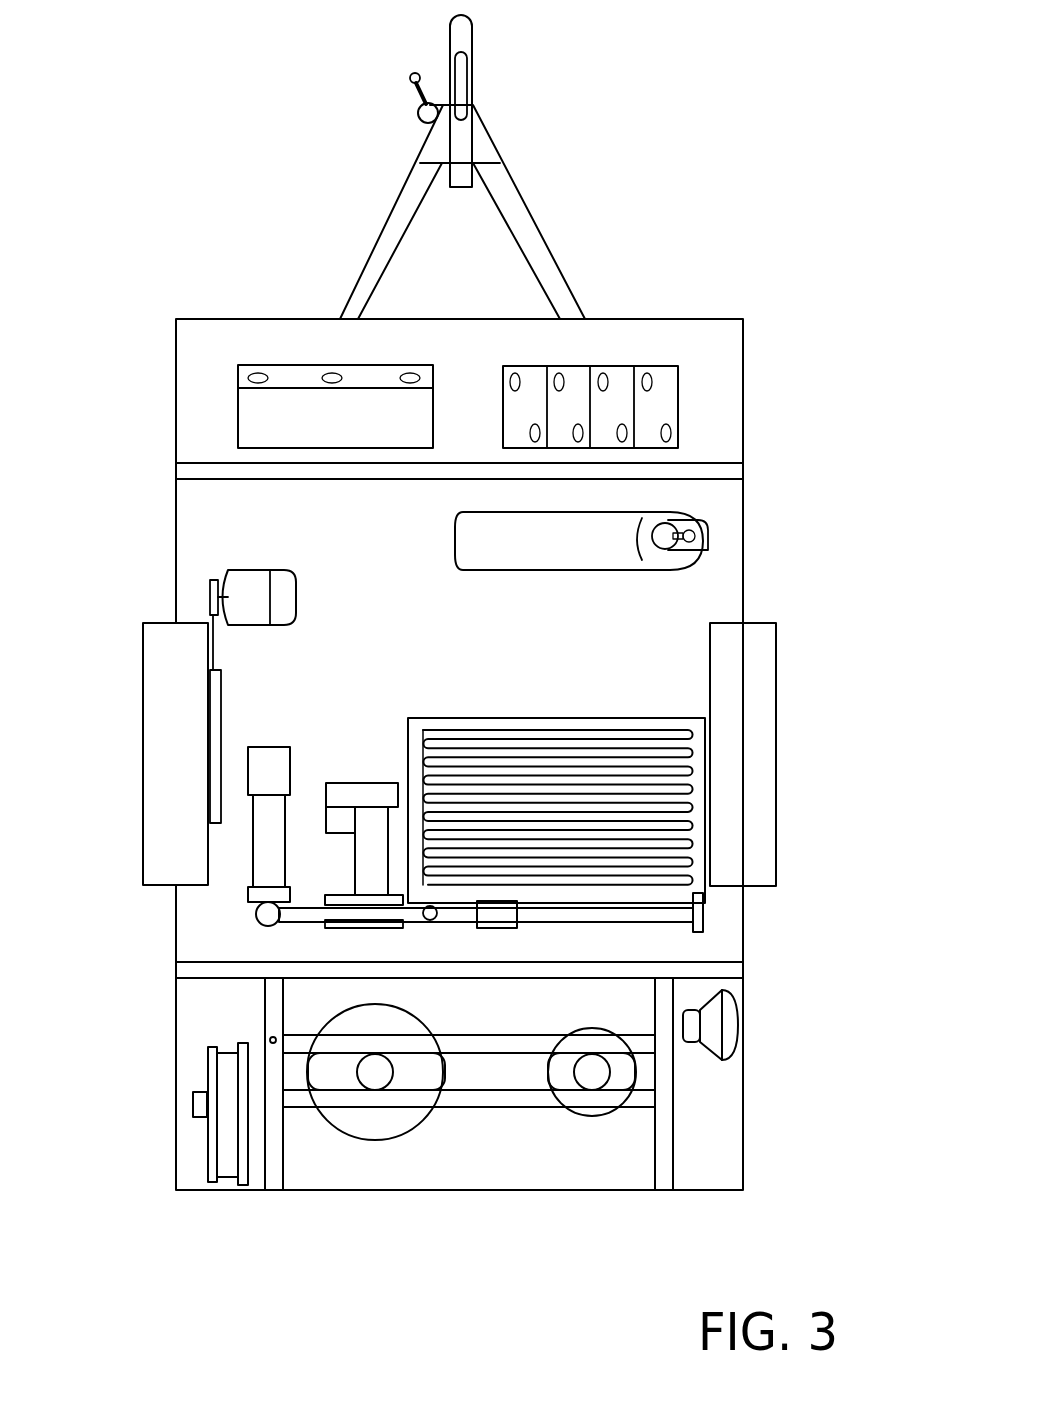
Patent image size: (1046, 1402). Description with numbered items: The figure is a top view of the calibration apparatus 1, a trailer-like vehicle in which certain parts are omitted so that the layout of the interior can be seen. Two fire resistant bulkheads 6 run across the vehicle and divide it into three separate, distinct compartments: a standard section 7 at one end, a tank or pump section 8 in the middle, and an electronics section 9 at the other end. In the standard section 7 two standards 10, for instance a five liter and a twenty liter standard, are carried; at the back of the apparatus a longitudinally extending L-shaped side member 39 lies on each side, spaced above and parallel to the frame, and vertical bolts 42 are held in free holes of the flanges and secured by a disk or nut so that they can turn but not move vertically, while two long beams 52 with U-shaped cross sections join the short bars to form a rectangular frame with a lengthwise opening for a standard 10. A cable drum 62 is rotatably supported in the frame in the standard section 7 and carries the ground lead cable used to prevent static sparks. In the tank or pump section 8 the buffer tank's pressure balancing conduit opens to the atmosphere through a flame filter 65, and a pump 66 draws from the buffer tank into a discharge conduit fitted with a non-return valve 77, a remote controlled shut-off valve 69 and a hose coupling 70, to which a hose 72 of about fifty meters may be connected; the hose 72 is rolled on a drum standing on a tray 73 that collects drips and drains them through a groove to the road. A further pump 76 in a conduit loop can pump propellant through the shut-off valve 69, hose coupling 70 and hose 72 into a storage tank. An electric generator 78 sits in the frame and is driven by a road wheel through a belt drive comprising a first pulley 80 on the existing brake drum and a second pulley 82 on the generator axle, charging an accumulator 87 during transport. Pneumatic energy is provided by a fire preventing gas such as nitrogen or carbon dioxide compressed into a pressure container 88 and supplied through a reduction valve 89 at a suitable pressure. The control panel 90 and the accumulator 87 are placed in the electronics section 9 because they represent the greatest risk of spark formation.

The calibration apparatus 1 is at (668, 268).
The fire resistant bulkheads 6 is at (743, 468).
The standard section 7 is at (727, 1138).
The tank or pump section 8 is at (685, 625).
The electronics section 9 is at (723, 347).
The standards 10 is at (343, 1127).
The side member 39 is at (268, 1060).
The bolts 42 is at (273, 1040).
The long beams 52 is at (463, 1107).
The cable drum 62 is at (207, 1153).
The flame filter 65 is at (742, 1040).
The pump 66 is at (262, 843).
The remote controlled shut-off valve 69 is at (497, 928).
The hose coupling 70 is at (705, 928).
The hose 72 is at (677, 775).
The tray 73 is at (670, 720).
The pump 76 is at (340, 822).
The non-return valve 77 is at (437, 920).
The electric generator 78 is at (227, 570).
The first pulley 80 is at (208, 790).
The second pulley 82 is at (210, 597).
The accumulator 87 is at (663, 407).
The pressure container 88 is at (453, 532).
The reduction valve 89 is at (708, 536).
The control panel 90 is at (238, 378).